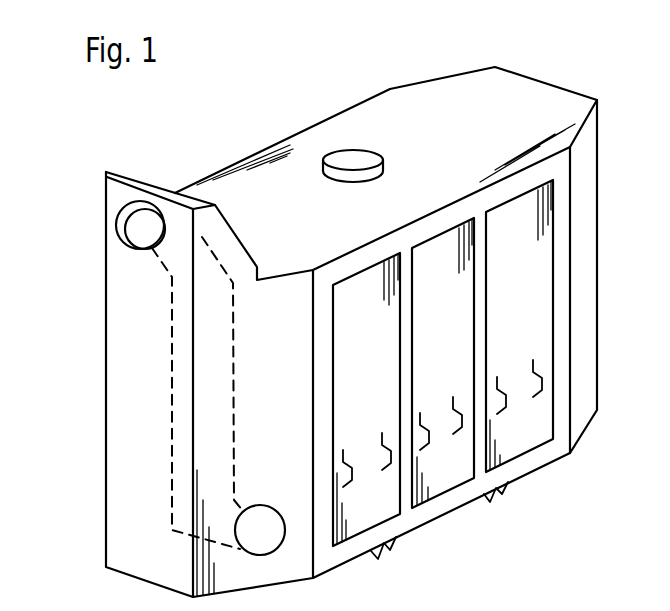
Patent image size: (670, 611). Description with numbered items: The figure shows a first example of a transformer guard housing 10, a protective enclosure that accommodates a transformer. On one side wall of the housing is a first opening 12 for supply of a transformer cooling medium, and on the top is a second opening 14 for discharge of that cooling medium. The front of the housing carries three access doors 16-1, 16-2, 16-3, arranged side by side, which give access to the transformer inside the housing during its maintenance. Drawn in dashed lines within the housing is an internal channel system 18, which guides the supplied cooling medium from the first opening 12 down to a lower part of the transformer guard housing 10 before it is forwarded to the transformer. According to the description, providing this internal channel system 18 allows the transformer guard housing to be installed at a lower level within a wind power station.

The transformer guard housing 10 is at (552, 84).
The first opening 12 is at (135, 247).
The second opening 14 is at (355, 152).
The access door 16-1 is at (333, 407).
The access door 16-2 is at (412, 370).
The access door 16-3 is at (486, 328).
The internal channel system 18 is at (233, 427).